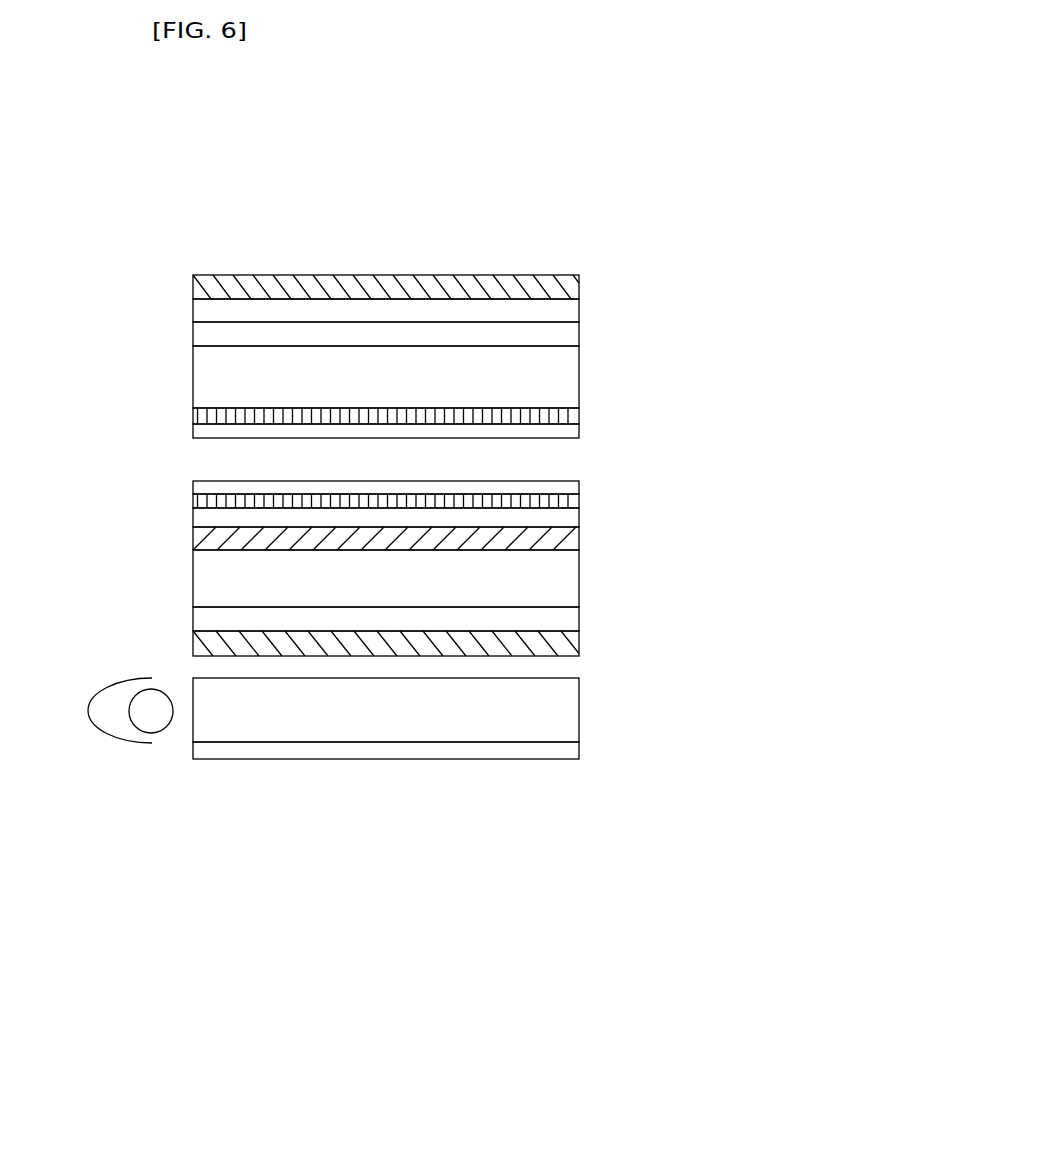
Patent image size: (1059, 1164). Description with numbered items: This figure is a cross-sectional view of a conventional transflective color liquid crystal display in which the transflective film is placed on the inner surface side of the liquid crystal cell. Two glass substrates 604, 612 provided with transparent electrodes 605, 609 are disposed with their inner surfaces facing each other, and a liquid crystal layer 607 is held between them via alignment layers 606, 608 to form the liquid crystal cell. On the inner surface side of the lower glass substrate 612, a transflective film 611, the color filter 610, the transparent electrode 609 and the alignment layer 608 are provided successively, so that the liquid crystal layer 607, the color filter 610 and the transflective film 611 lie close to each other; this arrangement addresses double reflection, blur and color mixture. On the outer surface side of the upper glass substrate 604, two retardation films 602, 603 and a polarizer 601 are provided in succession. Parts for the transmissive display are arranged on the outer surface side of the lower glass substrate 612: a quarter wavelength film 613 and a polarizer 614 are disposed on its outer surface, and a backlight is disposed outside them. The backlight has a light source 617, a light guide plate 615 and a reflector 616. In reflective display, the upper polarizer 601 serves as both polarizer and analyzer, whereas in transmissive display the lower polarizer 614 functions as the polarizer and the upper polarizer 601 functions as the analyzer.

The polarizer 601 is at (476, 248).
The retardation film 602 is at (515, 281).
The retardation film 603 is at (515, 317).
The glass substrate 604 is at (532, 369).
The transparent electrode 605 is at (543, 399).
The alignment layer 606 is at (525, 437).
The liquid crystal layer 607 is at (716, 479).
The alignment layer 608 is at (528, 515).
The transparent electrode 609 is at (547, 545).
The color filter 610 is at (553, 585).
The transflective film 611 is at (541, 622).
The glass substrate 612 is at (523, 668).
The 1/4 wavelength film 613 is at (478, 737).
The polarizer 614 is at (386, 776).
The light guide plate 615 is at (386, 835).
The reflector 616 is at (323, 837).
The light source 617 is at (99, 658).